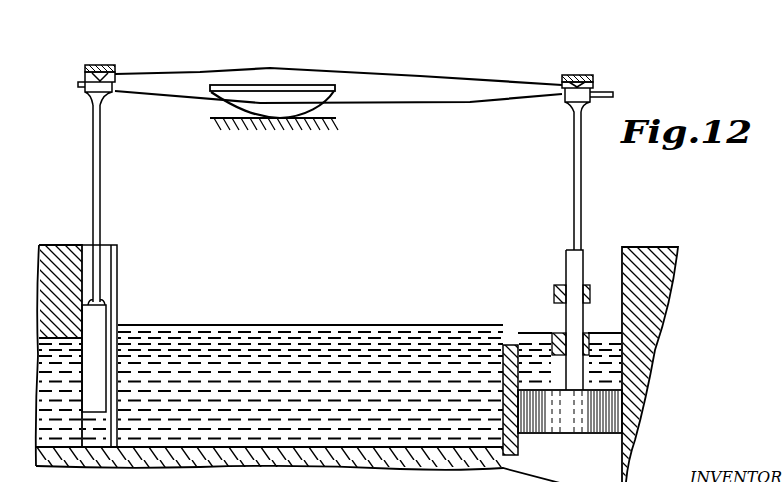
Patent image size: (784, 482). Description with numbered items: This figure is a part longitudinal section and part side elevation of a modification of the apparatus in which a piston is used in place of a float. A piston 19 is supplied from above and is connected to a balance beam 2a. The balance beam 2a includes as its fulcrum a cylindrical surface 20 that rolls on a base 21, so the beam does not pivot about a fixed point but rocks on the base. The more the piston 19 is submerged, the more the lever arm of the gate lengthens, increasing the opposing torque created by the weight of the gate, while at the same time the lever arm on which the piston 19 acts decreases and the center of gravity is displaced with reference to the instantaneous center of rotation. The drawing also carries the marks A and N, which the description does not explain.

The balance beam 2a is at (410, 81).
The cylindrical surface 20 is at (286, 117).
The base 21 is at (312, 128).
The float piston A is at (98, 343).
The liquid level N is at (456, 331).
The piston 19 is at (598, 434).